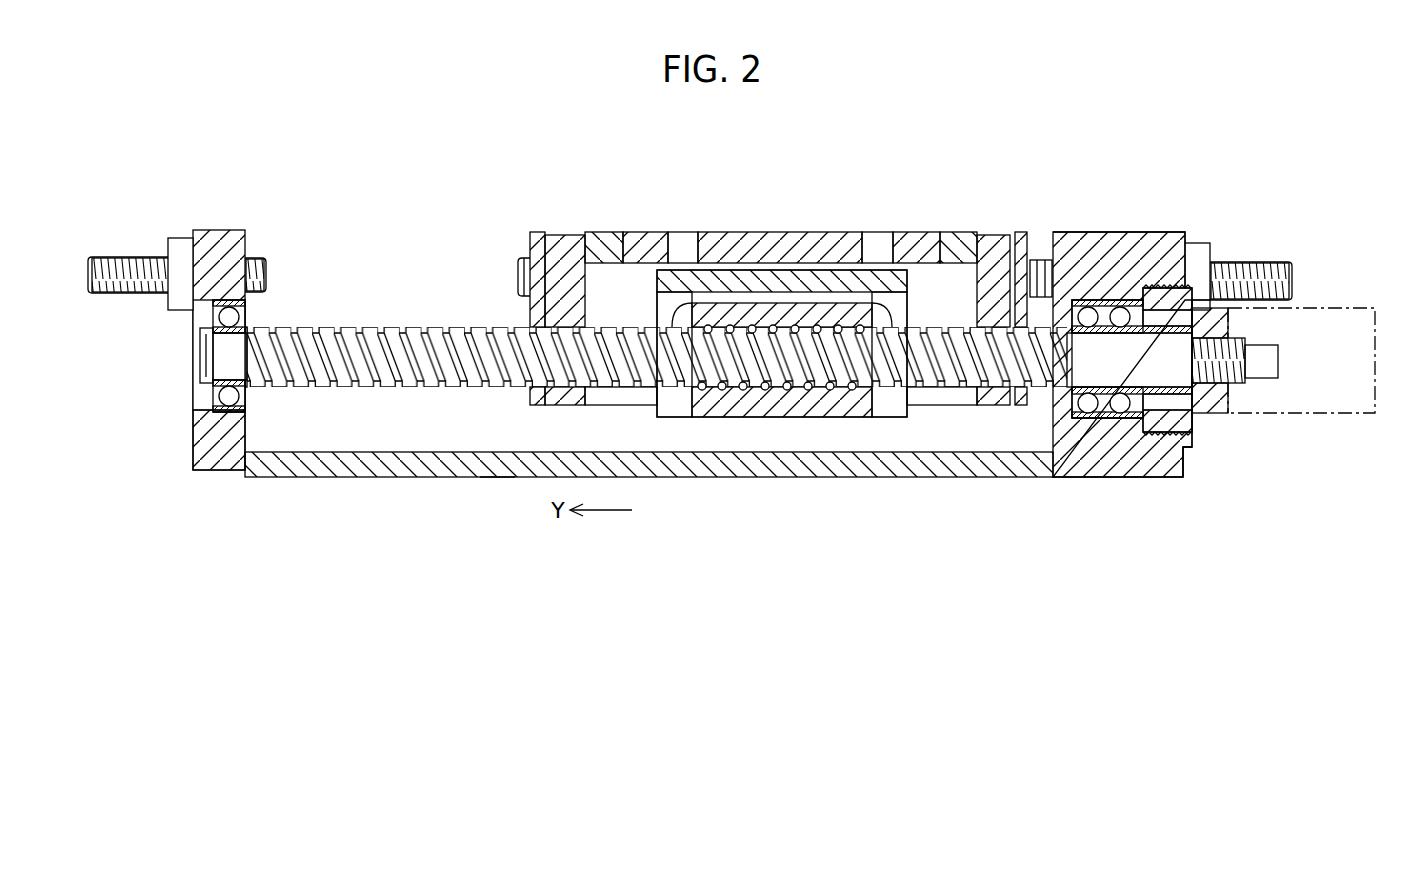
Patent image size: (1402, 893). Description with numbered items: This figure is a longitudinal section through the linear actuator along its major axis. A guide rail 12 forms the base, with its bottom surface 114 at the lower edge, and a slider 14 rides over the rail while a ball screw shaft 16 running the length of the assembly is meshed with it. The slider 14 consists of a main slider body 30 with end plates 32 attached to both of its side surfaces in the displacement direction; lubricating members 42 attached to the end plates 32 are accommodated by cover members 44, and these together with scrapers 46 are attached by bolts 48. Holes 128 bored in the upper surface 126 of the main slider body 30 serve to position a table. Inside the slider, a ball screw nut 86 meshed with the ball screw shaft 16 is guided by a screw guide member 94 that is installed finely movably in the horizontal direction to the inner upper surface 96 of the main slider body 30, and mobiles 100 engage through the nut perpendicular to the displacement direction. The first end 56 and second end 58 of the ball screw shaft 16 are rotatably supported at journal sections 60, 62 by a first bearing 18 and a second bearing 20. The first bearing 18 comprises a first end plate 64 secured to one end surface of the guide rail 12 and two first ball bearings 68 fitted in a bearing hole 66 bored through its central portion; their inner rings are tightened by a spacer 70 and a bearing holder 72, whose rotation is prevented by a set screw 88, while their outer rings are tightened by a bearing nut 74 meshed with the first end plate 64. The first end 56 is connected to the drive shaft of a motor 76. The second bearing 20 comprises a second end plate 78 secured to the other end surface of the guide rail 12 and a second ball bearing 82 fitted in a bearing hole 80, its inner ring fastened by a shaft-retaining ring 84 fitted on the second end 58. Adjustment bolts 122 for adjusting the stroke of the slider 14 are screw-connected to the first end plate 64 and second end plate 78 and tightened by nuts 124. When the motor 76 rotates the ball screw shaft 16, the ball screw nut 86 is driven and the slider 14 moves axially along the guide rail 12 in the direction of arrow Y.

The guide rail 12 is at (393, 479).
The slider 14 is at (738, 230).
The ball screw shaft 16 is at (415, 325).
The first bearing 18 is at (1171, 231).
The second bearing 20 is at (223, 229).
The main slider body 30 is at (720, 232).
The end plates 32 is at (603, 236).
The lubricating members 42 is at (570, 235).
The cover members 44 is at (548, 232).
The scrapers 46 is at (538, 232).
The bolts 48 is at (521, 277).
The first end 56 is at (1196, 413).
The second end 58 is at (205, 356).
The journal section 60 is at (1066, 375).
The journal section 62 is at (244, 374).
The first end plate 64 is at (1082, 463).
The bearing hole 66 is at (1115, 423).
The first ball bearings 68 is at (1090, 300).
The spacer 70 is at (1165, 477).
The bearing holder 72 is at (1215, 420).
The bearing nut 74 is at (1165, 288).
The motor 76 is at (1350, 414).
The second end plate 78 is at (200, 440).
The bearing hole 80 is at (213, 402).
The second ball bearing 82 is at (237, 413).
The shaft-retaining ring 84 is at (213, 323).
The ball screw nut 86 is at (783, 417).
The set screw 88 is at (1210, 306).
The screw guide member 94 is at (753, 302).
The inner upper surface 96 is at (780, 270).
The mobiles 100 is at (670, 417).
The bottom surface 114 is at (493, 478).
The adjustment bolts 122 is at (118, 257).
The nuts 124 is at (172, 238).
The upper surface 126 is at (910, 232).
The holes 128 is at (673, 232).